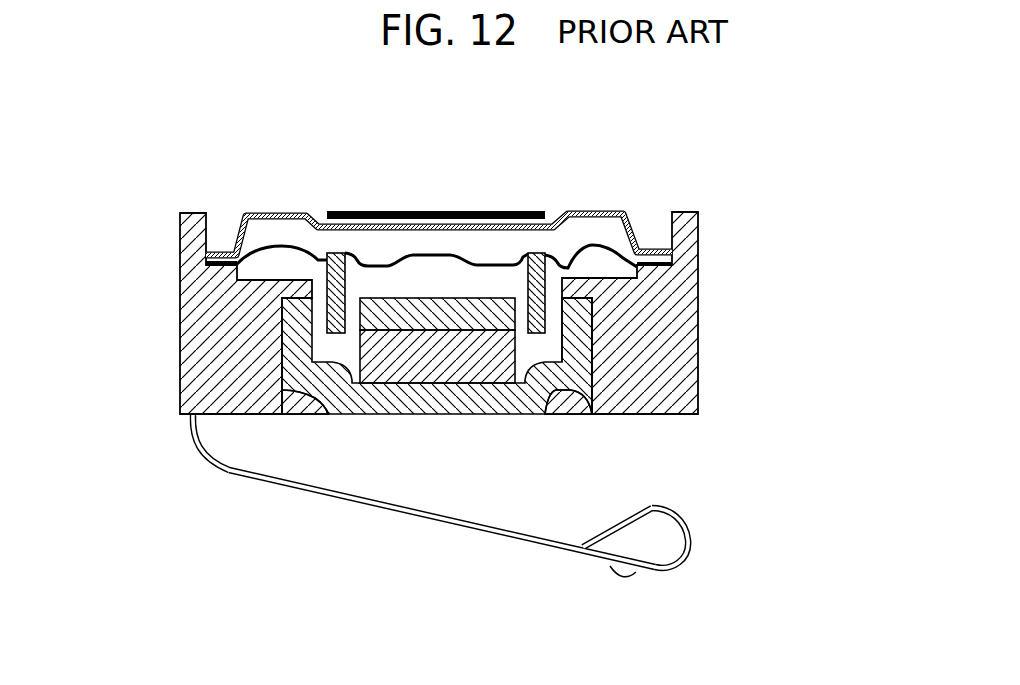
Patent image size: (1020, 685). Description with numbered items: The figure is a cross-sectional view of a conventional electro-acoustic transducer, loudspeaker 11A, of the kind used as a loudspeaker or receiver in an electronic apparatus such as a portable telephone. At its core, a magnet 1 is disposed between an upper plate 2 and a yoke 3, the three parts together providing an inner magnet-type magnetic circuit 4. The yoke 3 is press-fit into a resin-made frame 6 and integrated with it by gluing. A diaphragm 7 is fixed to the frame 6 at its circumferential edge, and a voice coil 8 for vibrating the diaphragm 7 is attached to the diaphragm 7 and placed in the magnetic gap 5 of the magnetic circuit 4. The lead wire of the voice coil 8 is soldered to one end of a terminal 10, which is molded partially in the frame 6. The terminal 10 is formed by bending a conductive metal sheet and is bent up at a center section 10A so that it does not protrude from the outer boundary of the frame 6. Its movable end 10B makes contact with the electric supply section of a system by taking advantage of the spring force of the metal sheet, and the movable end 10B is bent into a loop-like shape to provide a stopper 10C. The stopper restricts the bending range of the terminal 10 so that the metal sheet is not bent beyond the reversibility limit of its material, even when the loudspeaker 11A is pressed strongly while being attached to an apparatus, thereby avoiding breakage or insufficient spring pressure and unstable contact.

The magnet 1 is at (422, 342).
The upper plate 2 is at (462, 310).
The yoke 3 is at (295, 310).
The magnetic circuit 4 is at (445, 141).
The magnetic gap 5 is at (552, 302).
The frame 6 is at (677, 300).
The diaphragm 7 is at (600, 243).
The voice coil 8 is at (533, 253).
The terminal 10 is at (365, 507).
The center section 10A is at (192, 443).
The movable end 10B is at (602, 535).
The stopper 10C is at (673, 512).
The loudspeaker 11A is at (167, 360).